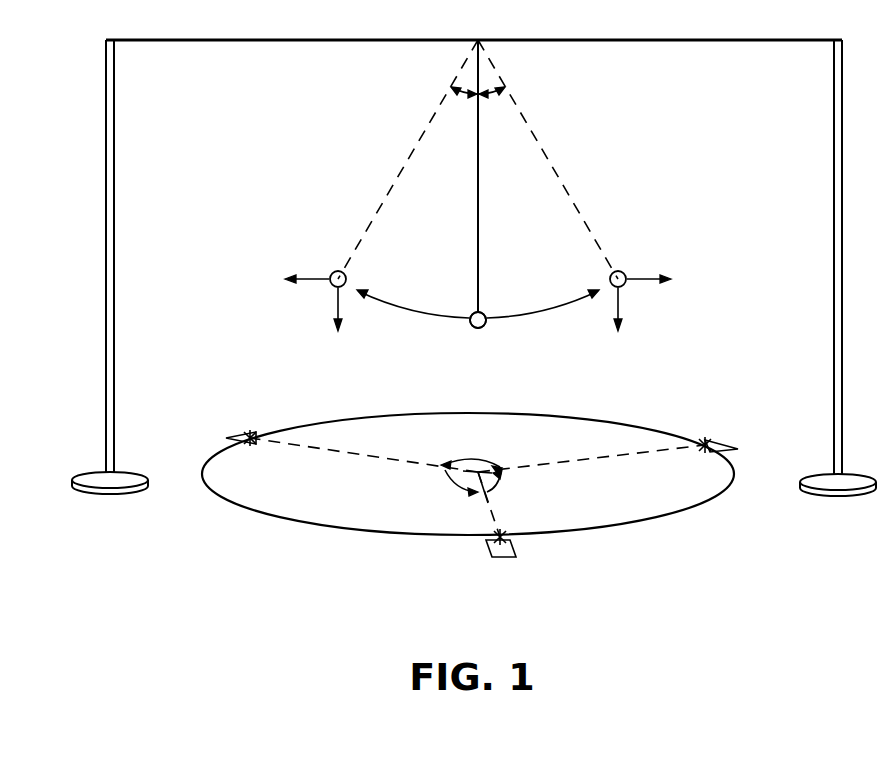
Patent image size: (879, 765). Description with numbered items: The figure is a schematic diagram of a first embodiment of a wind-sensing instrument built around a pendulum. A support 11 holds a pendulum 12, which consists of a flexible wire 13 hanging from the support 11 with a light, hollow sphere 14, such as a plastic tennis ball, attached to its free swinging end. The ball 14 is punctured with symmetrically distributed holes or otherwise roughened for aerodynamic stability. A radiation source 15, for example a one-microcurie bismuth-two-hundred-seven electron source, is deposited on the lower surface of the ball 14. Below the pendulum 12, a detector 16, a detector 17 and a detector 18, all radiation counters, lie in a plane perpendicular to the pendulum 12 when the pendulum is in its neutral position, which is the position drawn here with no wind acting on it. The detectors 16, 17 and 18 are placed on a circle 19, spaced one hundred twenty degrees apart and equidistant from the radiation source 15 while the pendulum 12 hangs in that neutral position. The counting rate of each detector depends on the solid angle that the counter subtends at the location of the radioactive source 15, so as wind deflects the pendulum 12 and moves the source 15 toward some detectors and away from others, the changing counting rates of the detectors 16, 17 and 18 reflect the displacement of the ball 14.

The support 11 is at (340, 40).
The pendulum 12 is at (457, 240).
The flexible wire 13 is at (478, 176).
The hollow sphere 14 is at (483, 313).
The radiation source 15 is at (478, 329).
The detector 16 is at (243, 432).
The detector 17 is at (722, 437).
The detector 18 is at (506, 556).
The circle 19 is at (640, 525).